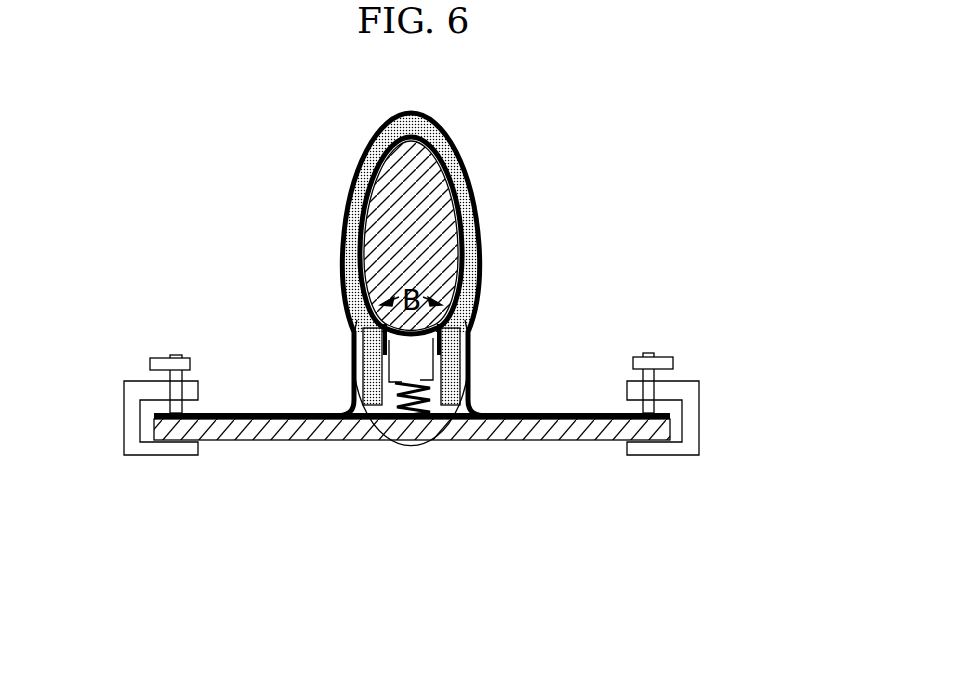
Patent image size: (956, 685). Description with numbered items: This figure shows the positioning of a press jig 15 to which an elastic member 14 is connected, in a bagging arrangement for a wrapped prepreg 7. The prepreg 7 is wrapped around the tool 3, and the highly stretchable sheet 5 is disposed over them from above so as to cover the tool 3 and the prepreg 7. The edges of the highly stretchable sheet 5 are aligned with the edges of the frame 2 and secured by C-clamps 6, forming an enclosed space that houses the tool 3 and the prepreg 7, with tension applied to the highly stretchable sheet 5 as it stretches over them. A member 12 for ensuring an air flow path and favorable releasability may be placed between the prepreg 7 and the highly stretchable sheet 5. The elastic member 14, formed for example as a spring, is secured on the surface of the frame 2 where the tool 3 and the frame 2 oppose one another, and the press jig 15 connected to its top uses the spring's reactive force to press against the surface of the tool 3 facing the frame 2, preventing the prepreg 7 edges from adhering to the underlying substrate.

The frame 2 is at (267, 440).
The tool 3 is at (390, 198).
The highly stretchable sheet 5 is at (477, 223).
The C-clamp 6 is at (690, 416).
The prepreg 7 is at (360, 275).
The member for ensuring an air flow path and favorable releasability 12 is at (470, 265).
The elastic member 14 is at (400, 432).
The press jig 15 is at (422, 362).